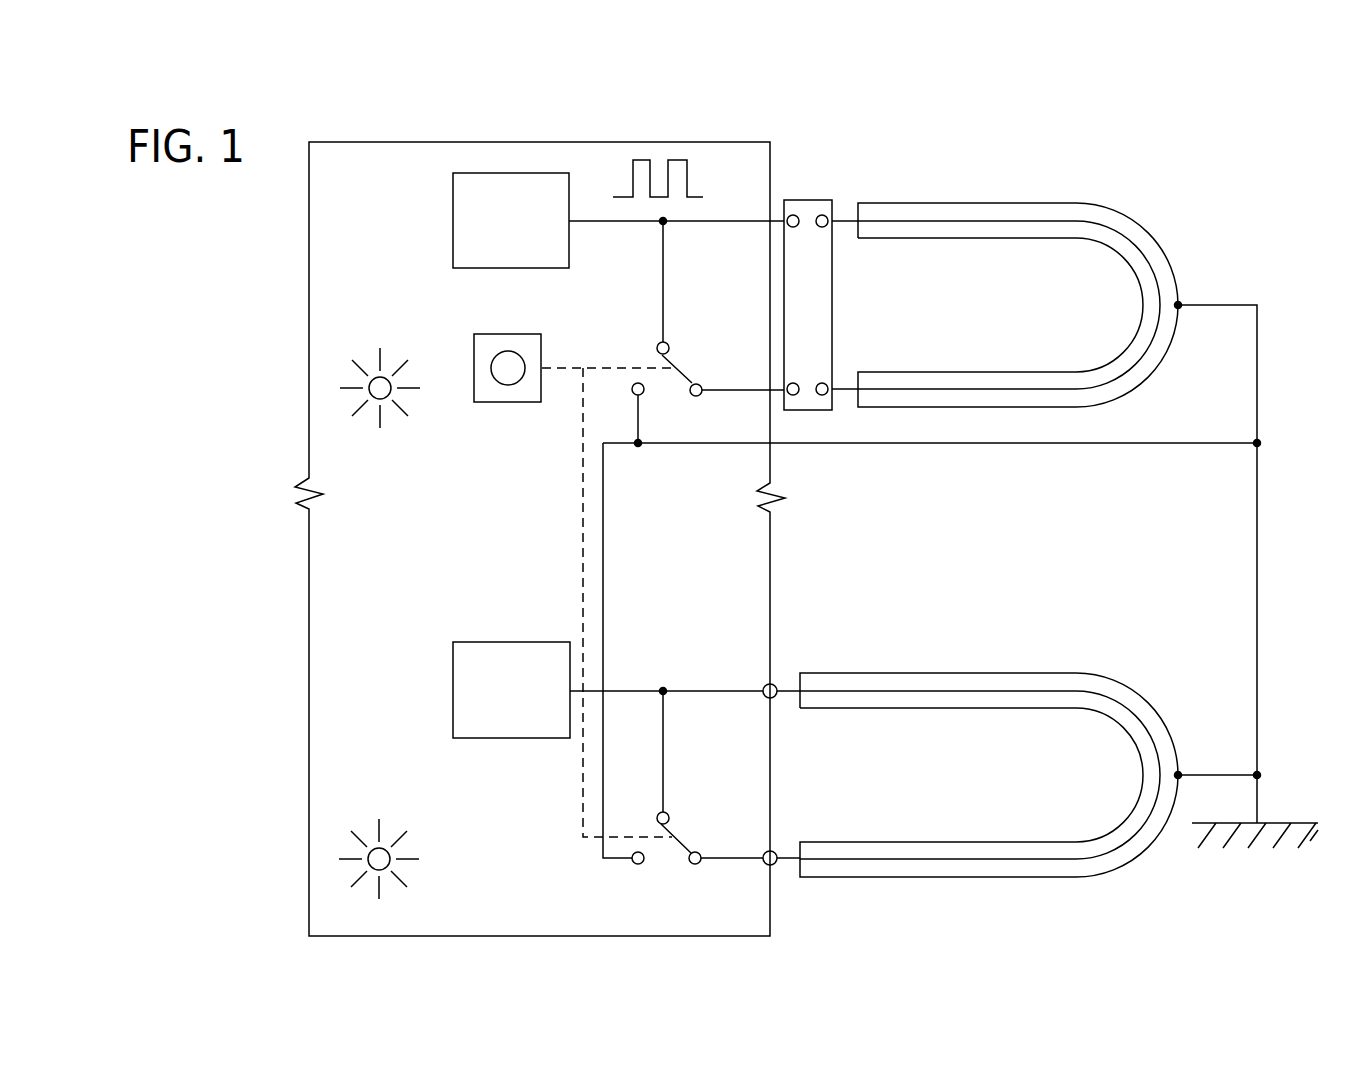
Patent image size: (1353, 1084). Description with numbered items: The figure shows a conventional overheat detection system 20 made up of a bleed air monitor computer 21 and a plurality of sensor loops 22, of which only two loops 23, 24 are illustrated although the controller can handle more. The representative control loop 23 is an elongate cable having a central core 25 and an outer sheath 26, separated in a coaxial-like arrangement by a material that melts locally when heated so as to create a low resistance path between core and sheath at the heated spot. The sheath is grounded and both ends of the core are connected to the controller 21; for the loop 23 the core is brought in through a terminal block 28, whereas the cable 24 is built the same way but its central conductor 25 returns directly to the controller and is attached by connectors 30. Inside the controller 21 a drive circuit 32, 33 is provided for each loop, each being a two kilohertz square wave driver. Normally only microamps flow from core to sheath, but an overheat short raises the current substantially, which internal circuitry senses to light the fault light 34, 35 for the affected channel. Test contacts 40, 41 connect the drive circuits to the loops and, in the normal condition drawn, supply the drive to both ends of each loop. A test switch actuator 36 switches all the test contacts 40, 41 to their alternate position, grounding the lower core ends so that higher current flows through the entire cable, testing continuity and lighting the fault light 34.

The overheat detection system 20 is at (998, 546).
The bleed air monitor computer 21 is at (548, 141).
The sensor loops 22 is at (1006, 481).
The control loop 23 is at (958, 316).
The cable 24 is at (958, 786).
The central core 25 is at (1005, 220).
The outer sheath 26 is at (1157, 240).
The terminal block 28 is at (807, 199).
The connectors 30 is at (775, 685).
The drive circuit 32 is at (453, 200).
The drive circuit 33 is at (453, 672).
The fault light 34 is at (373, 373).
The fault light 35 is at (372, 845).
The test switch actuator 36 is at (508, 333).
The test contact 40 is at (685, 376).
The test contact 41 is at (685, 843).